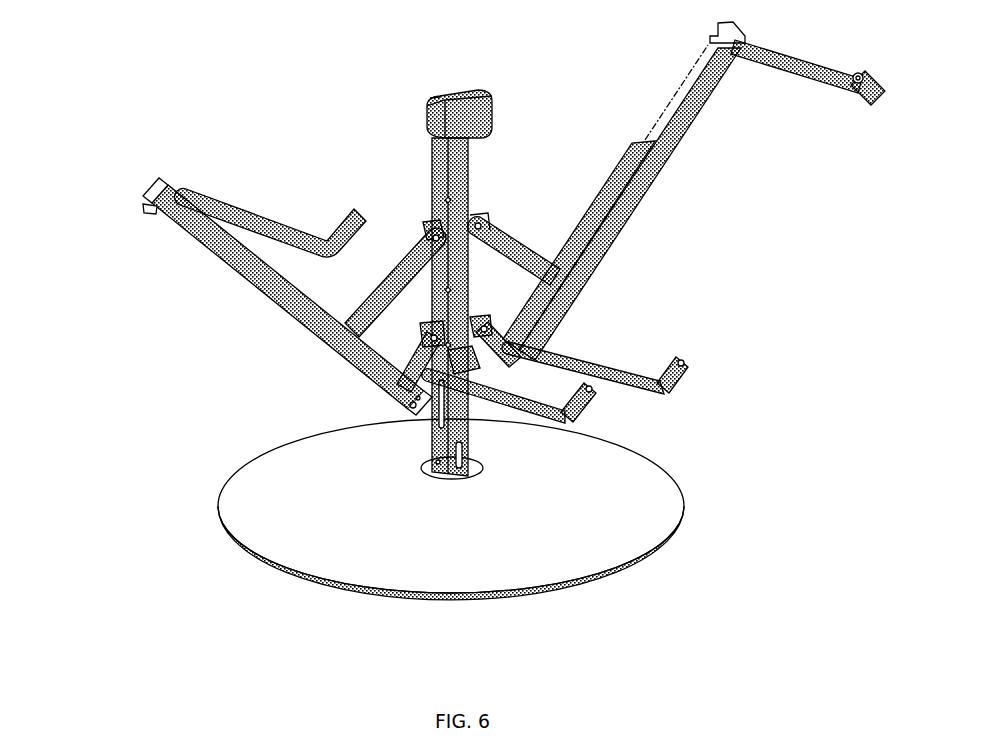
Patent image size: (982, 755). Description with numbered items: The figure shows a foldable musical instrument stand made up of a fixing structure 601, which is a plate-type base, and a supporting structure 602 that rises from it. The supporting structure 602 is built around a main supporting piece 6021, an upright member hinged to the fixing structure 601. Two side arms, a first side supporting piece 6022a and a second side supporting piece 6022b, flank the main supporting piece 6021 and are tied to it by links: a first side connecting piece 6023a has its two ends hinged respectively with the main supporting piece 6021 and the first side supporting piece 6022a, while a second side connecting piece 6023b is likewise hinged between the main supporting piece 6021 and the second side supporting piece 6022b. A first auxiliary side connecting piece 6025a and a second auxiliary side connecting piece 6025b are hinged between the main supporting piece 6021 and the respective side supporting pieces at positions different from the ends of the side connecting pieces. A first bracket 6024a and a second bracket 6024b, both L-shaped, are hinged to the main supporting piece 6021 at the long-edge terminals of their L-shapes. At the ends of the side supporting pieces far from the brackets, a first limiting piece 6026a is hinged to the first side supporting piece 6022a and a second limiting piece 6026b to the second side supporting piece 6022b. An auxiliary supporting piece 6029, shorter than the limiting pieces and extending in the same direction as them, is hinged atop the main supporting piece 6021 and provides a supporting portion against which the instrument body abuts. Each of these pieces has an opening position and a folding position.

The fixing structure 601 is at (620, 530).
The supporting structure 602 is at (102, 350).
The main supporting piece 6021 is at (455, 197).
The auxiliary supporting piece 6029 is at (475, 113).
The first side supporting piece 6022a is at (673, 133).
The second side supporting piece 6022b is at (273, 288).
The first side connecting piece 6023a is at (498, 243).
The second side connecting piece 6023b is at (415, 262).
The first bracket 6024a is at (676, 371).
The second bracket 6024b is at (578, 405).
The first auxiliary side connecting piece 6025a is at (497, 337).
The second auxiliary side connecting piece 6025b is at (422, 363).
The first limiting piece 6026a is at (753, 52).
The second limiting piece 6026b is at (258, 222).